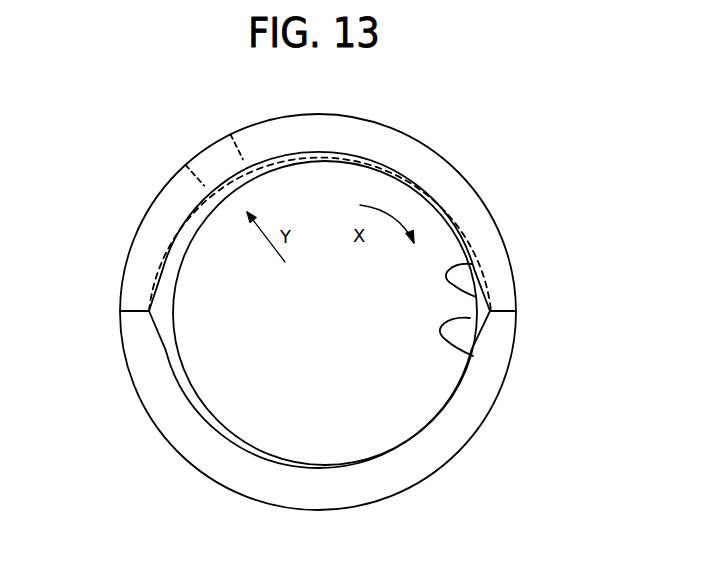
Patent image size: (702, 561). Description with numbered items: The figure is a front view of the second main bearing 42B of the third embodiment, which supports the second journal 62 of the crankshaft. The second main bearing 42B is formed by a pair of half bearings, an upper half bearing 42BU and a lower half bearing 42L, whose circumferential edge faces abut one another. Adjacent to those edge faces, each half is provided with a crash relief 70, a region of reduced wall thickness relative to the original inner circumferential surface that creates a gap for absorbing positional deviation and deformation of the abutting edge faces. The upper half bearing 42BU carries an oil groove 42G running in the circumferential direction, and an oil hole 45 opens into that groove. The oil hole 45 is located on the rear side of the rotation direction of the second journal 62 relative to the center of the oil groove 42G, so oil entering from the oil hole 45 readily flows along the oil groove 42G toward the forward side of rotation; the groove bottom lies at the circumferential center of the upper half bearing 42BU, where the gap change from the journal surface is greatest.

The second main bearing 42B is at (178, 172).
The upper half bearing 42BU is at (152, 223).
The lower half bearing 42L is at (128, 347).
The oil groove 42G is at (290, 147).
The oil hole 45 is at (220, 148).
The second journal 62 is at (403, 392).
The crash relief 70 is at (460, 265).